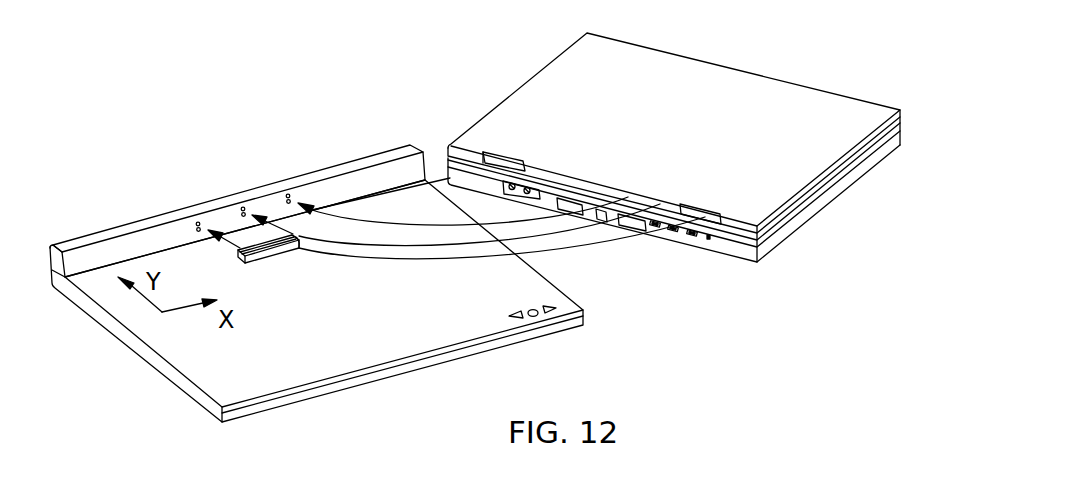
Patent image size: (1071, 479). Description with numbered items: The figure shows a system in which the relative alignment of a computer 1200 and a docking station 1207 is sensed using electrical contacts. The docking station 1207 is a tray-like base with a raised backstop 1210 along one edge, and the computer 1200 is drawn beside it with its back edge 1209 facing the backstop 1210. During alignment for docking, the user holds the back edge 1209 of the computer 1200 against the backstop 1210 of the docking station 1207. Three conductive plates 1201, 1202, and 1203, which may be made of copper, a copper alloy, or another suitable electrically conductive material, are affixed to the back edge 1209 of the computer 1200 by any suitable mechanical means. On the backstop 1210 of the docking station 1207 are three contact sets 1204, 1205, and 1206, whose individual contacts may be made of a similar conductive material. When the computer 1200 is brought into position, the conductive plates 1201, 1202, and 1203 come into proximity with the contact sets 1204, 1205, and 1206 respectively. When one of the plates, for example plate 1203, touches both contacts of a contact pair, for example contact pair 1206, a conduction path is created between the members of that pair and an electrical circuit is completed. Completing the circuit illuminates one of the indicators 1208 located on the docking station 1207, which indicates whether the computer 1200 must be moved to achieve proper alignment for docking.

The computer 1200 is at (508, 75).
The conductive plate 1201 is at (625, 217).
The conductive plate 1202 is at (600, 213).
The conductive plate 1203 is at (565, 202).
The contact set 1204 is at (198, 222).
The contact set 1205 is at (243, 207).
The contact set 1206 is at (288, 194).
The docking station 1207 is at (413, 382).
The indicators 1208 is at (520, 298).
The back edge 1209 is at (733, 249).
The backstop 1210 is at (373, 177).